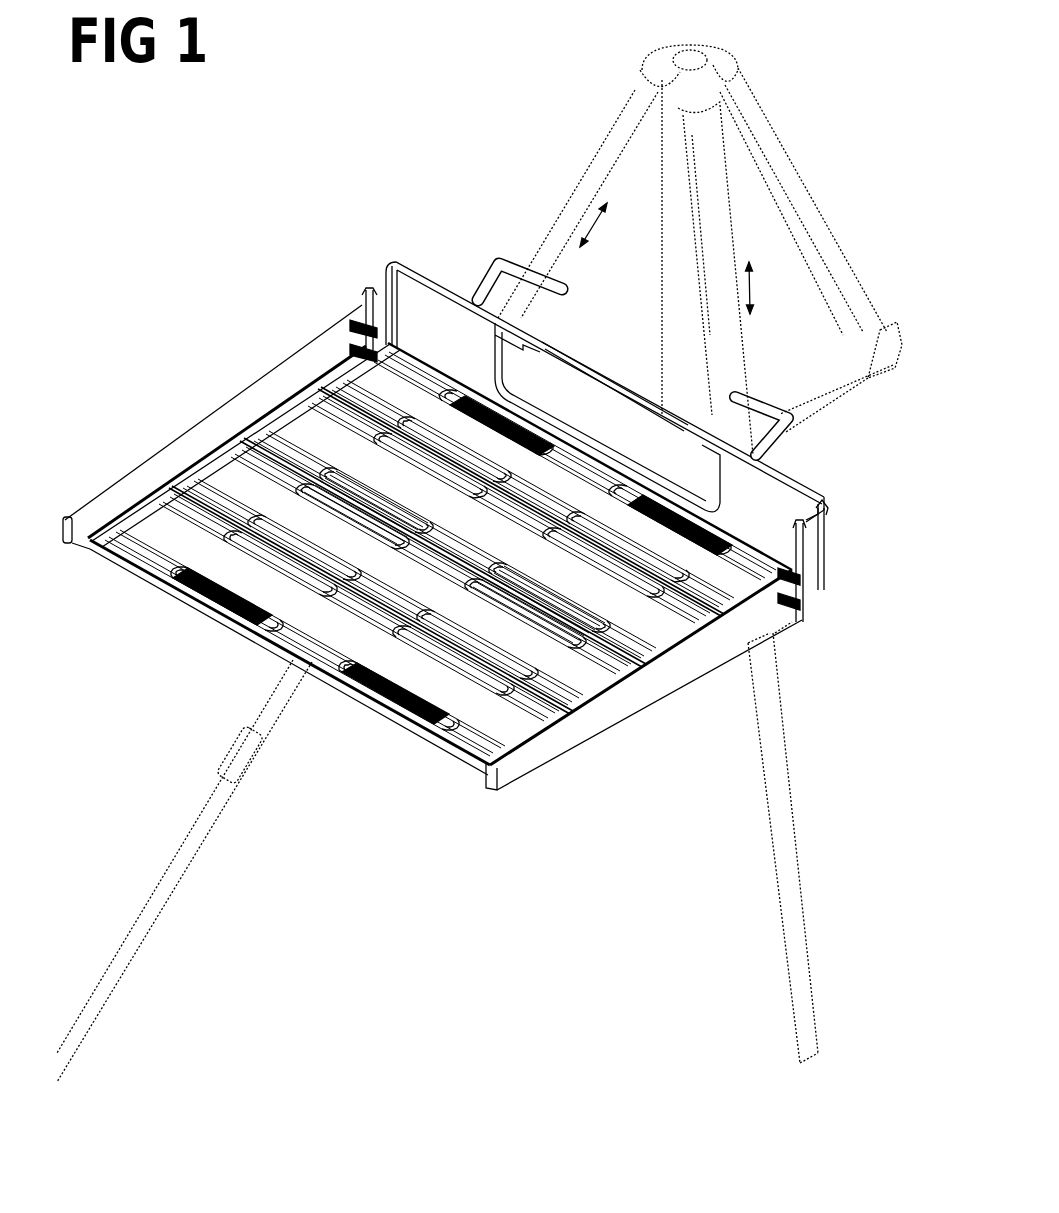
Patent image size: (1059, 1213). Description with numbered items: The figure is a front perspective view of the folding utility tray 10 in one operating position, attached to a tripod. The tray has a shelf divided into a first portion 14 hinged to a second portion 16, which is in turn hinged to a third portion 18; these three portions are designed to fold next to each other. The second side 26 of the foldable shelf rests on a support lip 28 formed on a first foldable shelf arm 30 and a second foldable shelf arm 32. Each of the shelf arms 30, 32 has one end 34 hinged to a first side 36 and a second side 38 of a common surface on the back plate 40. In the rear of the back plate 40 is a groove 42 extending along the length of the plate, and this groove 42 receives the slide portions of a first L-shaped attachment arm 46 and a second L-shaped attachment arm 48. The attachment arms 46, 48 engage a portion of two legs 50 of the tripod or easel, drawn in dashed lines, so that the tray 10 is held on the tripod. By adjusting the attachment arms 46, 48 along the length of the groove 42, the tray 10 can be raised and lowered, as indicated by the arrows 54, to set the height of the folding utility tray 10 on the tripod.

The folding utility tray 10 is at (295, 315).
The first portion 14 is at (488, 725).
The second portion 16 is at (565, 690).
The third portion 18 is at (643, 643).
The second side 26 is at (157, 505).
The support lip 28 is at (80, 545).
The first foldable shelf arm 30 is at (700, 643).
The second foldable shelf arm 32 is at (227, 420).
The end 34 is at (373, 295).
The first side 36 is at (800, 517).
The second side 38 is at (397, 273).
The back plate 40 is at (435, 322).
The groove 42 is at (822, 493).
The first L-shaped attachment arm 46 is at (757, 400).
The second L-shaped attachment arm 48 is at (520, 263).
The legs 50 is at (760, 145).
The arrows 54 is at (594, 225).